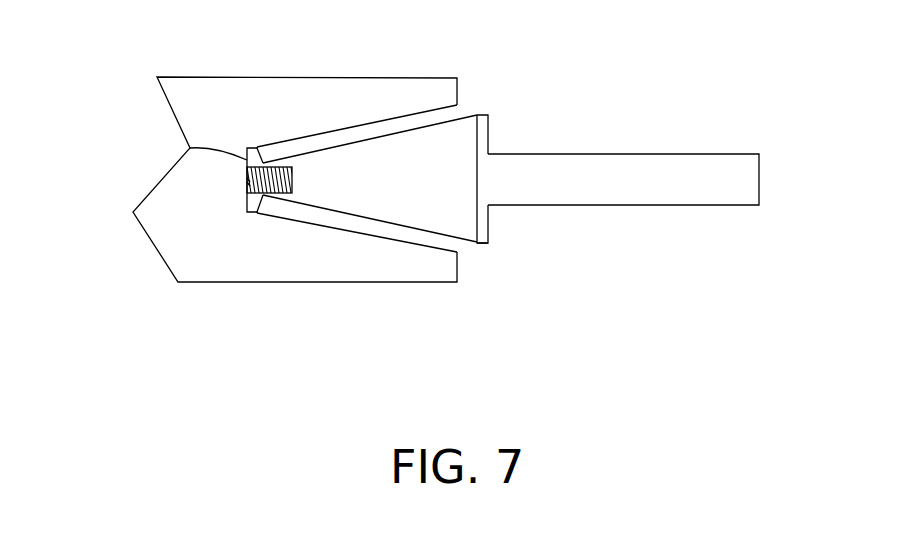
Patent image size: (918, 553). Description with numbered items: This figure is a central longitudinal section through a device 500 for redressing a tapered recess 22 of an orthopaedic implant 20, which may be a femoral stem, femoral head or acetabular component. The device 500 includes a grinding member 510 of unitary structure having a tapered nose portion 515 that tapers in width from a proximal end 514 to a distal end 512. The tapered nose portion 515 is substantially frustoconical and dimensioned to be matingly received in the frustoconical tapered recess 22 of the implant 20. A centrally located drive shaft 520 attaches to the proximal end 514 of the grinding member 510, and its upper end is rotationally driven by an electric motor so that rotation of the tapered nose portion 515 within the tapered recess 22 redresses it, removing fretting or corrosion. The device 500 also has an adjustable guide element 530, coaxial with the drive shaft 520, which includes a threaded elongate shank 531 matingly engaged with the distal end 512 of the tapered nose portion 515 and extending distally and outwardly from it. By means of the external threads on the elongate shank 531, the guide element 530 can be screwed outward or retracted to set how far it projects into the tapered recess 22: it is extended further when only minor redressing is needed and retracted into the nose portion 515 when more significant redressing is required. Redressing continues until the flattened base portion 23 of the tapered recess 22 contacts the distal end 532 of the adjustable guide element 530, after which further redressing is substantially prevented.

The orthopaedic implant 20 is at (96, 45).
The tapered recess 22 is at (317, 133).
The flattened base portion 23 is at (190, 148).
The device 500 is at (762, 67).
The grinding member 510 is at (397, 133).
The distal end 512 is at (253, 147).
The proximal end 514 is at (489, 222).
The tapered nose portion 515 is at (412, 210).
The drive shaft 520 is at (636, 154).
The adjustable guide element 530 is at (252, 178).
The threaded elongate shank 531 is at (247, 182).
The distal end 532 is at (247, 180).